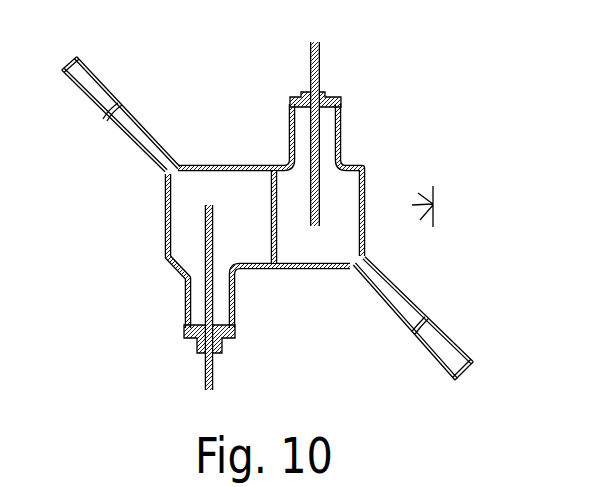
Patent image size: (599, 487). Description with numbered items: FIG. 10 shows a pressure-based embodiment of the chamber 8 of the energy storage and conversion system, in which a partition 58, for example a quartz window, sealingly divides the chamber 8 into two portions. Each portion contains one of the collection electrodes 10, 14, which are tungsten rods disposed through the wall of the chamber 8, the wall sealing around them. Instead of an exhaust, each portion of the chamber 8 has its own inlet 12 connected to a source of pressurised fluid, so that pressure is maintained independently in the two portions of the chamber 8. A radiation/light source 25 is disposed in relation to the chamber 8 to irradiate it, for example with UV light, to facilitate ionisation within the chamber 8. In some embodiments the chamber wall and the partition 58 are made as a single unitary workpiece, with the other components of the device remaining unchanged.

The chamber 8 is at (239, 193).
The collection electrode 10 is at (200, 247).
The inlet 12 is at (132, 112).
The collection electrode 14 is at (320, 196).
The radiation/light source 25 is at (436, 192).
The partition 58 is at (282, 238).